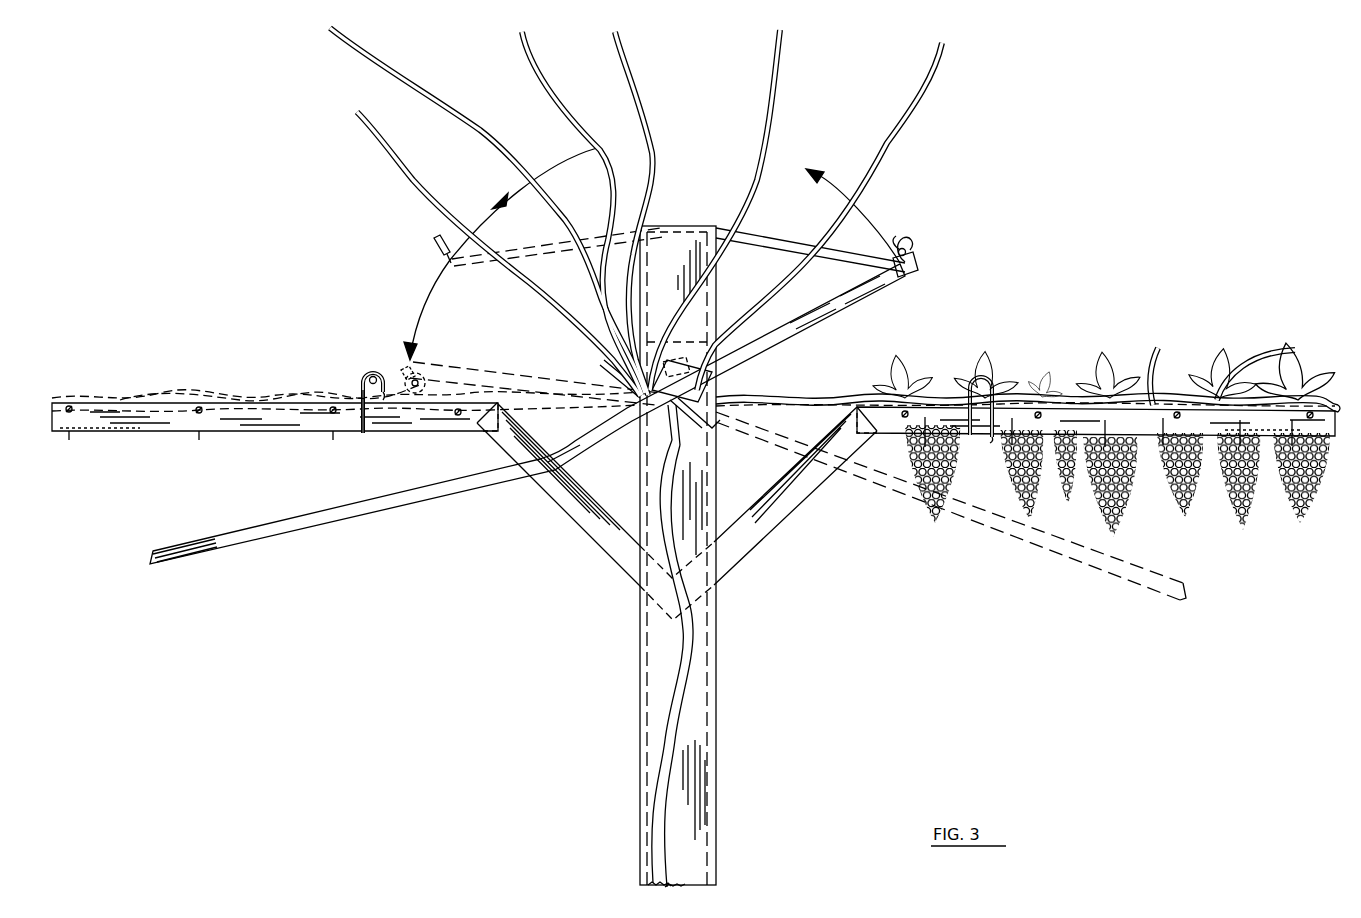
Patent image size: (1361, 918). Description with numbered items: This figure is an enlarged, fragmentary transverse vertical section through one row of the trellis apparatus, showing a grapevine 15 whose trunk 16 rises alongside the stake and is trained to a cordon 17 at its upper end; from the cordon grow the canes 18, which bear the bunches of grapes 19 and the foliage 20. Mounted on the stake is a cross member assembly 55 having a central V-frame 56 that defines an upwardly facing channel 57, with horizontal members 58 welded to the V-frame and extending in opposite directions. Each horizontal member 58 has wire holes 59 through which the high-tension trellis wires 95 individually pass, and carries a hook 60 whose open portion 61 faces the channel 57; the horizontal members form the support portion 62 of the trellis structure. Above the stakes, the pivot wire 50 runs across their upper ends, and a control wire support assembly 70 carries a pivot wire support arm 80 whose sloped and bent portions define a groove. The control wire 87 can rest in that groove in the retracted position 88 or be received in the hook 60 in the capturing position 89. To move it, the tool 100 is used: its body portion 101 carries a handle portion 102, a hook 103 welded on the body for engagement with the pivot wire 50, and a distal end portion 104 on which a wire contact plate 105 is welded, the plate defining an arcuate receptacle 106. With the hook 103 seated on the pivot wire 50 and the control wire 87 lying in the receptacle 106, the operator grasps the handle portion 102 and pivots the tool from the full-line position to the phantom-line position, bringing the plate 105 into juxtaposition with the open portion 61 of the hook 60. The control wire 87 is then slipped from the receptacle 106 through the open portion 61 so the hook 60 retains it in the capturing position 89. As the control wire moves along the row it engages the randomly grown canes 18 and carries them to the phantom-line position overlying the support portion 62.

The grapevine 15 is at (650, 742).
The trunk 16 is at (697, 640).
The cordon 17 is at (606, 371).
The canes 18 is at (530, 61).
The bunches of grapes 19 is at (928, 505).
The foliage 20 is at (1123, 377).
The pivot wire 50 is at (668, 437).
The cross member assembly 55 is at (128, 403).
The V-frame 56 is at (580, 510).
The channel 57 is at (568, 473).
The horizontal member 58 is at (275, 432).
The wire holes 59 is at (333, 406).
The hook 60 is at (372, 378).
The open portion 61 is at (386, 393).
The support portion 62 is at (128, 432).
The control wire support assembly 70 is at (660, 278).
The pivot wire support arm 80 is at (505, 245).
The control wire 87 is at (418, 375).
The retracted position 88 is at (922, 273).
The capturing position 89 is at (358, 368).
The trellis wires 95 is at (70, 406).
The tool 100 is at (331, 522).
The body portion 101 is at (588, 425).
The handle portion 102 is at (256, 548).
The hook 103 is at (712, 428).
The distal end portion 104 is at (893, 280).
The wire contact member or plate 105 is at (912, 237).
The arcuate receptacle 106 is at (893, 245).